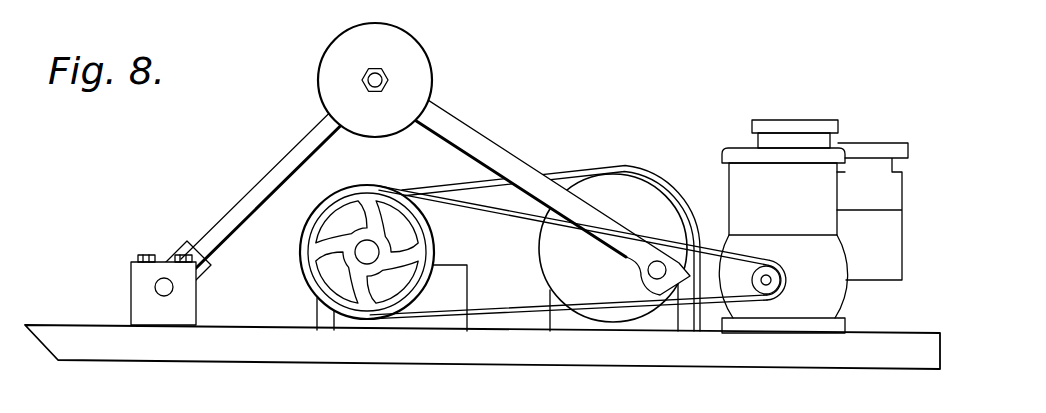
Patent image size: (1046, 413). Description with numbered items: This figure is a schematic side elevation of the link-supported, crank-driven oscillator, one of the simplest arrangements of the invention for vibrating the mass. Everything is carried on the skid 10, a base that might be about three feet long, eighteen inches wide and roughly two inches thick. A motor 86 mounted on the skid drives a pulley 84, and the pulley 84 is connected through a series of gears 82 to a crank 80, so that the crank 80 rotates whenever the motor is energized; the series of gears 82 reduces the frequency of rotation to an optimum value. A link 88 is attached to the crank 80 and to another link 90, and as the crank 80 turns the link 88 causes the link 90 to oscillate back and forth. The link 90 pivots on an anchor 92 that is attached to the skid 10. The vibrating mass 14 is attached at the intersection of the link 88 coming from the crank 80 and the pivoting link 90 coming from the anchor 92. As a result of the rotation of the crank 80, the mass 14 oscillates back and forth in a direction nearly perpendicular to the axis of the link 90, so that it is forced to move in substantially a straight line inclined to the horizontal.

The skid 10 is at (186, 352).
The vibrating mass 14 is at (420, 73).
The crank 80 is at (634, 196).
The series of gears 82 is at (470, 192).
The pulley 84 is at (352, 313).
The motor 86 is at (773, 175).
The link 88 is at (497, 157).
The link 90 is at (246, 197).
The anchor 92 is at (140, 268).